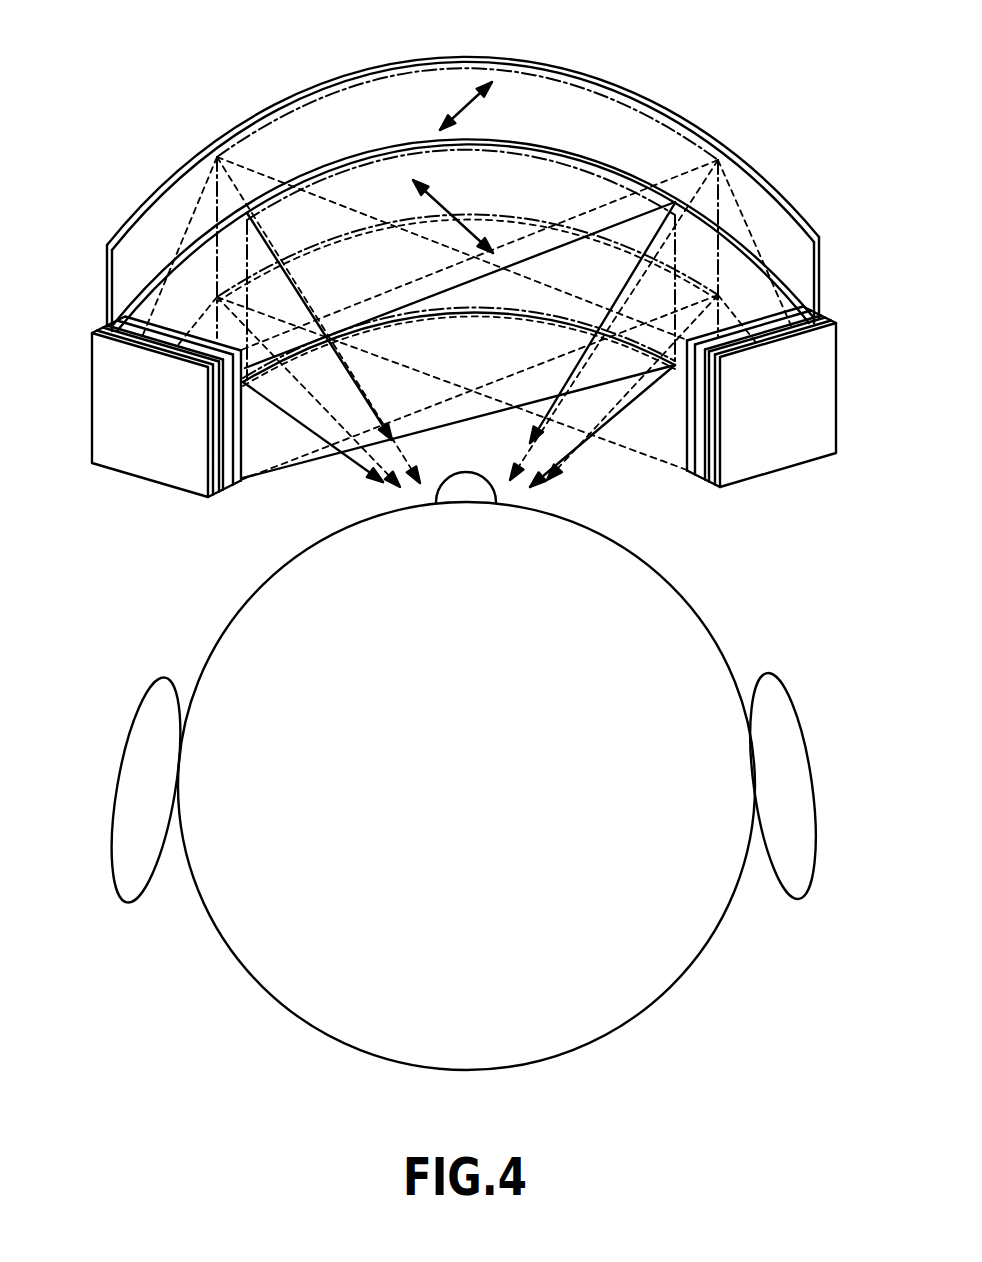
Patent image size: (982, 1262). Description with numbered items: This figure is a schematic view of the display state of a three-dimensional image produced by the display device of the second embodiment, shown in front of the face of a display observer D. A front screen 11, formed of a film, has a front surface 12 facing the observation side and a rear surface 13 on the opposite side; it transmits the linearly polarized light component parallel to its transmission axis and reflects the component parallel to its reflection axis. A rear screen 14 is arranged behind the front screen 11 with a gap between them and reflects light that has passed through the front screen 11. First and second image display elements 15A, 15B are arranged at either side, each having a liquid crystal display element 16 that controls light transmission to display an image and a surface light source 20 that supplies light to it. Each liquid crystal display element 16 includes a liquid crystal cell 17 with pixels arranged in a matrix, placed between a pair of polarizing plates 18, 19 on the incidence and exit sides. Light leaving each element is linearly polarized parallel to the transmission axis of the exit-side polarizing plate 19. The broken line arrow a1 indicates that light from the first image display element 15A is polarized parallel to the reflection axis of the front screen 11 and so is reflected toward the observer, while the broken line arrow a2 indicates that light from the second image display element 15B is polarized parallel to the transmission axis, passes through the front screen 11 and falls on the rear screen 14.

The front screen 11 is at (642, 159).
The front surface 12 is at (493, 296).
The rear surface 13 is at (557, 143).
The rear screen 14 is at (609, 71).
The first image display element 15A is at (118, 485).
The second image display element 15B is at (810, 476).
The liquid crystal display element 16 is at (261, 431).
The liquid crystal cell 17 is at (235, 478).
The incidence-side polarizing plate 18 is at (223, 458).
The exit-side polarizing plate 19 is at (238, 452).
The surface light source 20 is at (112, 413).
The display observer D is at (711, 626).
The broken line arrow a1 is at (448, 200).
The broken line arrow a2 is at (468, 108).